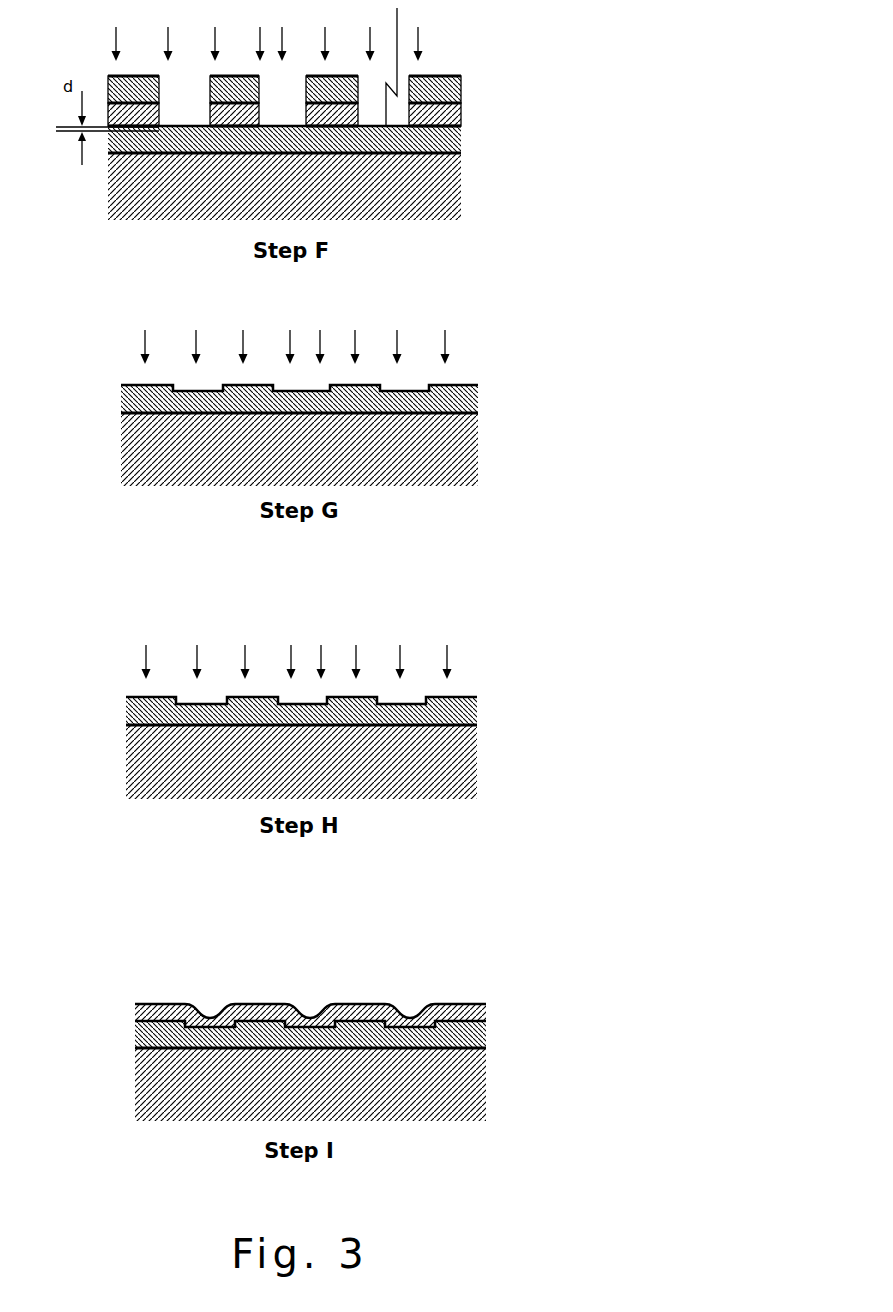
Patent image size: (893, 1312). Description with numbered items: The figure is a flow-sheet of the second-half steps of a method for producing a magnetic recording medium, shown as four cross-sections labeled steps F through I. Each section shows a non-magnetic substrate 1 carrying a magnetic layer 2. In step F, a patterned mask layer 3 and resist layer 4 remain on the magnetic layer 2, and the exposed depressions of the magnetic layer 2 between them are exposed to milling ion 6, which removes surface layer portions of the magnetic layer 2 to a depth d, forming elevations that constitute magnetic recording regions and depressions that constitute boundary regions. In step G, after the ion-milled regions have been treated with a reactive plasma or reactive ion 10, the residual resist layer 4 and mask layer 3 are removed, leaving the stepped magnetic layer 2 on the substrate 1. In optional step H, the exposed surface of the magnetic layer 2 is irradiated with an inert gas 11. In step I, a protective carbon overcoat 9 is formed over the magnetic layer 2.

The non-magnetic substrate 1 is at (453, 176).
The magnetic layer 2 is at (453, 130).
The mask layer 3 is at (453, 105).
The resist layer 4 is at (453, 76).
The milling ion 6 is at (412, 25).
The protective overcoat 9 is at (478, 1001).
The reactive plasma or reactive ion 10 is at (295, 329).
The inert gas 11 is at (297, 641).